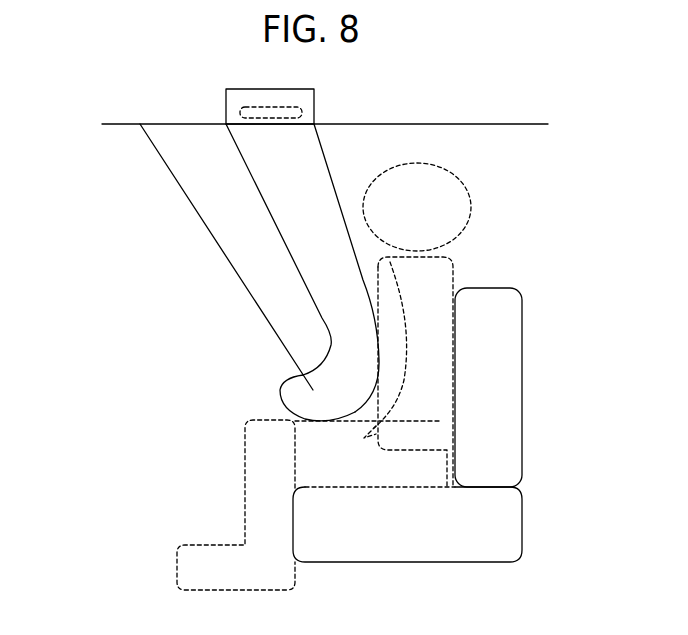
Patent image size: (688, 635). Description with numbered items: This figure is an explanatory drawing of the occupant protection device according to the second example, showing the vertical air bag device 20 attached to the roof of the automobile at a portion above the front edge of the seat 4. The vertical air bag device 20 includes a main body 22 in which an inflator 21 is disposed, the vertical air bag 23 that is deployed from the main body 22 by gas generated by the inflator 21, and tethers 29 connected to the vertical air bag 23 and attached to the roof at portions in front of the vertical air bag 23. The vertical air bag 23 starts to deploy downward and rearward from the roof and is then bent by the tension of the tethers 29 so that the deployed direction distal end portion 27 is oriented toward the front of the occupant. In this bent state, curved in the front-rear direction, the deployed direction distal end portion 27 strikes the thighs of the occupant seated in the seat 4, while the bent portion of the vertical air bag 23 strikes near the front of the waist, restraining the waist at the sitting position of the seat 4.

The seat 4 is at (493, 518).
The vertical air bag device 20 is at (153, 308).
The inflator 21 is at (302, 115).
The main body 22 is at (226, 100).
The vertical air bag 23 is at (315, 155).
The deployed direction distal end portion 27 is at (337, 390).
The tethers 29 is at (187, 202).